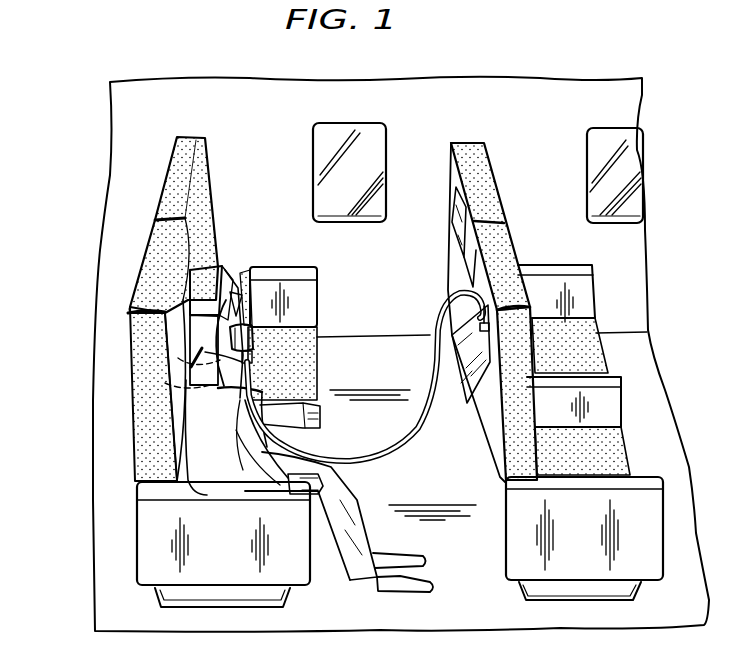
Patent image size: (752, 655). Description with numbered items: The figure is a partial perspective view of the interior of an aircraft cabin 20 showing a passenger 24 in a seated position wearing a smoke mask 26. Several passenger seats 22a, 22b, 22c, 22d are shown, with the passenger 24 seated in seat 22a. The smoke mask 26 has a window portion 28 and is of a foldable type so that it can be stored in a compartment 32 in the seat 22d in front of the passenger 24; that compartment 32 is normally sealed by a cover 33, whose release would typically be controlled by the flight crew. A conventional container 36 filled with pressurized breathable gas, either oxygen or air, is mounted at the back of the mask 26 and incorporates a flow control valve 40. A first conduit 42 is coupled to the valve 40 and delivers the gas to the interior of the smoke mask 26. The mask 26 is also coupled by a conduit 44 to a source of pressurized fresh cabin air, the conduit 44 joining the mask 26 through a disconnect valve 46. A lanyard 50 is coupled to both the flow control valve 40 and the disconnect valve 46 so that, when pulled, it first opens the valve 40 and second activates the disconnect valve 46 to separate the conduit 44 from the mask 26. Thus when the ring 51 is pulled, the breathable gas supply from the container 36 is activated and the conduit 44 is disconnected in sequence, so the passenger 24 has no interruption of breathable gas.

The aircraft cabin 20 is at (100, 253).
The passenger seat 22a is at (128, 313).
The passenger seat 22b is at (165, 192).
The passenger seat 22c is at (493, 188).
The passenger seat 22d is at (504, 247).
The passenger 24 is at (165, 450).
The smoke mask 26 is at (233, 236).
The window portion 28 is at (229, 296).
The compartment 32 is at (489, 327).
The cover 33 is at (458, 243).
The container 36 is at (180, 358).
The flow control valve 40 is at (165, 383).
The first conduit 42 is at (195, 355).
The conduit 44 is at (406, 433).
The disconnect valve 46 is at (257, 357).
The lanyard 50 is at (252, 412).
The ring 51 is at (248, 420).